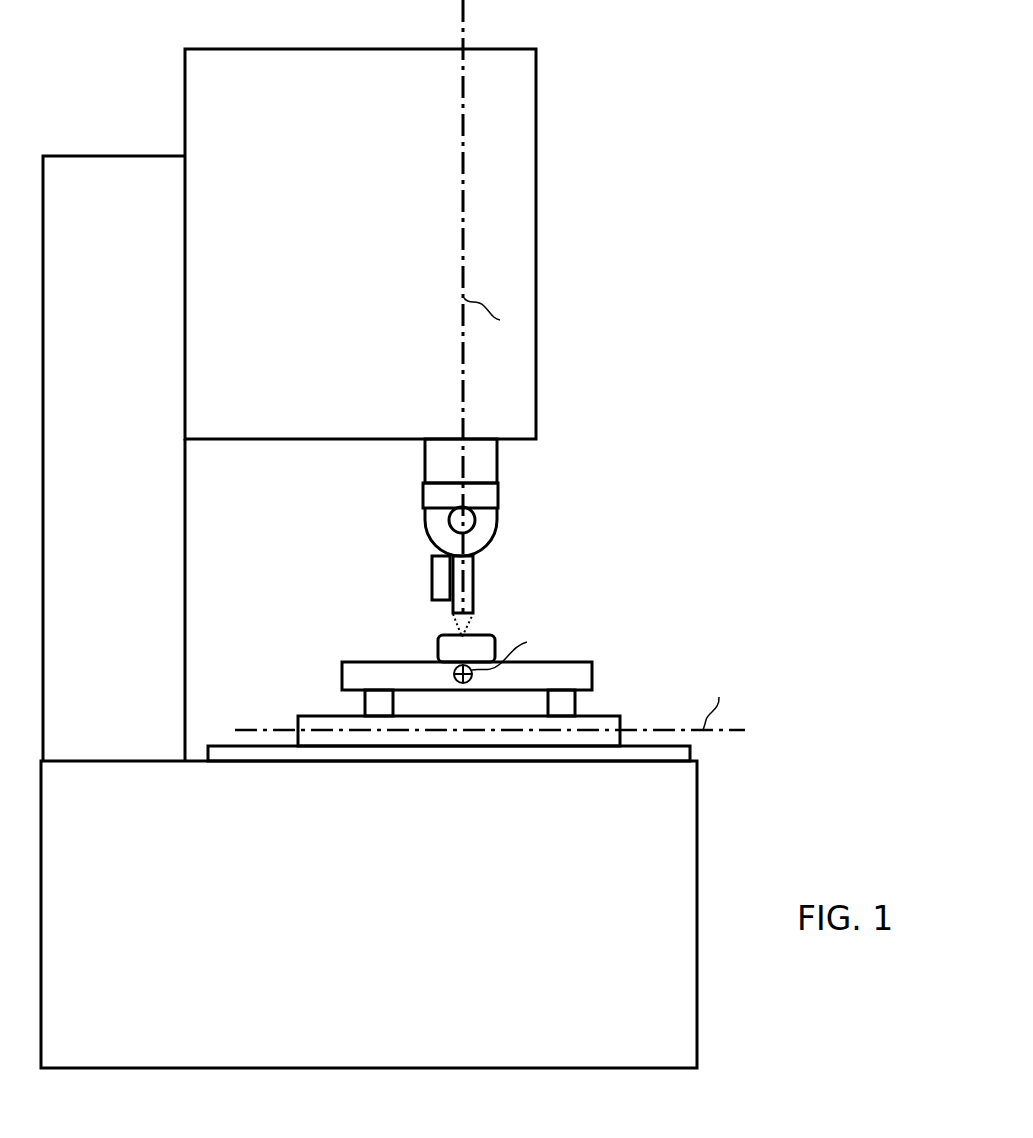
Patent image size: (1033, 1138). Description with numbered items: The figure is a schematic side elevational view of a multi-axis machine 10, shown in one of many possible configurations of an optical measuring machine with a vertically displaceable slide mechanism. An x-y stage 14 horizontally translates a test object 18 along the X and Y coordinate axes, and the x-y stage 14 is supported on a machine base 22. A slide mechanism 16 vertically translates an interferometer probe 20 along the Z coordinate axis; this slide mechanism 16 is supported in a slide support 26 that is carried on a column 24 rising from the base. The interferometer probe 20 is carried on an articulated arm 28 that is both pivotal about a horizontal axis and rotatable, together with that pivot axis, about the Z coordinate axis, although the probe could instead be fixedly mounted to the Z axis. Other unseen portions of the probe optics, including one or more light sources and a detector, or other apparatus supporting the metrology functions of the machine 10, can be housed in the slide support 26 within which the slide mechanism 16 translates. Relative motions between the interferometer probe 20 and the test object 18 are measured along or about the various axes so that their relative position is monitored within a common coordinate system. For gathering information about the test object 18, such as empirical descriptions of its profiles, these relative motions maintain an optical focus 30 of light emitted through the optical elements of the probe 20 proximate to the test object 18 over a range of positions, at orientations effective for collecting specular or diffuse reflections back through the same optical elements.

The multi-axis machine 10 is at (393, 534).
The x-y stage 14 is at (347, 661).
The slide mechanism 16 is at (426, 460).
The test object 18 is at (437, 643).
The interferometer probe 20 is at (473, 575).
The machine base 22 is at (363, 896).
The column 24 is at (122, 364).
The slide support 26 is at (326, 269).
The articulated arm 28 is at (498, 527).
The optical focus 30 is at (472, 634).